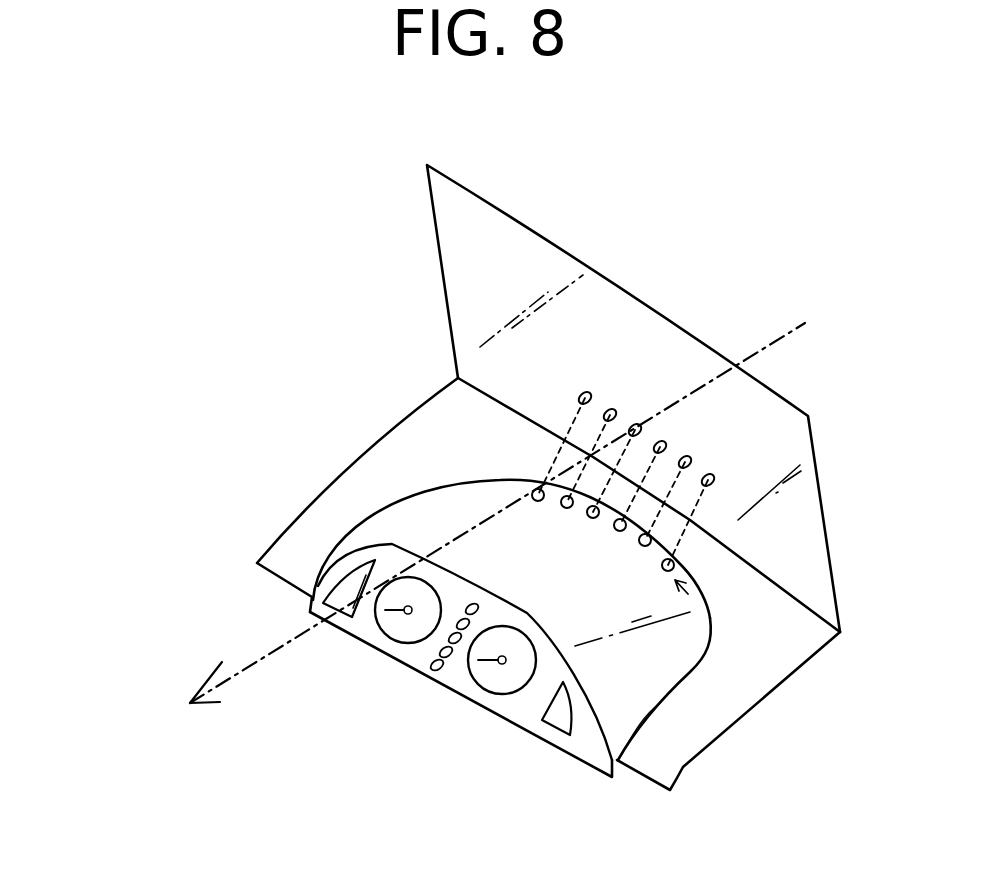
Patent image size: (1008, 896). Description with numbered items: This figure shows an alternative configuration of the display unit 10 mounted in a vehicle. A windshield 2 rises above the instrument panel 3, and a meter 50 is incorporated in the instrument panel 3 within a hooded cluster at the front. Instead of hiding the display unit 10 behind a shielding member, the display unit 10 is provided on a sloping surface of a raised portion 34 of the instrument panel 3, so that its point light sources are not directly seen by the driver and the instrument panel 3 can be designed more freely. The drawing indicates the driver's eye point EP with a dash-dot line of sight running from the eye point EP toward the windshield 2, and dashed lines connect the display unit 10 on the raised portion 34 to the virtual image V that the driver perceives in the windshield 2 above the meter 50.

The windshield 2 is at (477, 320).
The instrument panel 3 is at (370, 485).
The display unit 10 is at (710, 617).
The raised portion 34 is at (663, 657).
The meter 50 is at (485, 690).
The virtual image V is at (723, 488).
The eye point EP is at (185, 678).